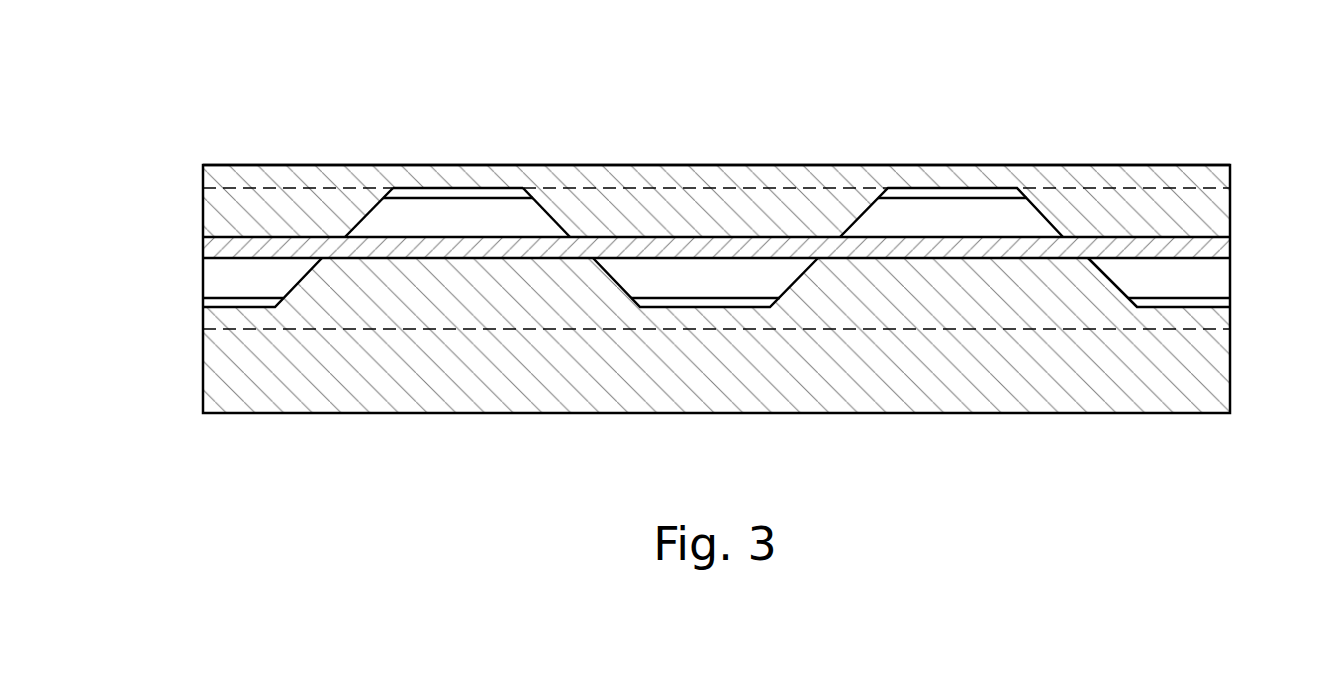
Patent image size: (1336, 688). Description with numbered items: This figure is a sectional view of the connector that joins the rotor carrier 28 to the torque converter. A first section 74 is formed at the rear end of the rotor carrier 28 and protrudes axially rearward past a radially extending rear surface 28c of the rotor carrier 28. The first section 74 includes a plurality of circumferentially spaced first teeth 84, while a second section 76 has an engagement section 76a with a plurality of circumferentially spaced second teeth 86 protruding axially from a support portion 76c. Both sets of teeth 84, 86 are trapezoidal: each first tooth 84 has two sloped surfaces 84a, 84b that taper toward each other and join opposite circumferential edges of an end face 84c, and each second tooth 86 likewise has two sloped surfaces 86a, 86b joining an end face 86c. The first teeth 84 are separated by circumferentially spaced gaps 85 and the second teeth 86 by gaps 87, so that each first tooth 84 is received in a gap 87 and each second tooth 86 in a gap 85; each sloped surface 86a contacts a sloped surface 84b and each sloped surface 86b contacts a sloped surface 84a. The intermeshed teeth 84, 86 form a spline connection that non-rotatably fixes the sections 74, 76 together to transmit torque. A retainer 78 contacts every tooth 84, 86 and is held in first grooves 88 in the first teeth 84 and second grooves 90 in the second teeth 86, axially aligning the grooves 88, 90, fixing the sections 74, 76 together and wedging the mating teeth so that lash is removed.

The rotor carrier 28 is at (843, 378).
The rear surface 28c is at (348, 330).
The first section 74 is at (550, 305).
The second section 76 is at (1108, 152).
The engagement section 76a is at (633, 198).
The support portion 76c is at (927, 178).
The retainer 78 is at (233, 248).
The first teeth 84 is at (528, 297).
The sloped surface 84a is at (369, 214).
The sloped surface 84b is at (537, 203).
The end face 84c is at (457, 200).
The gaps 85 is at (218, 323).
The second teeth 86 is at (263, 222).
The sloped surface 86a is at (550, 212).
The sloped surface 86b is at (866, 218).
The end face 86c is at (728, 298).
The gaps 87 is at (429, 162).
The first grooves 88 is at (442, 258).
The second grooves 90 is at (710, 237).